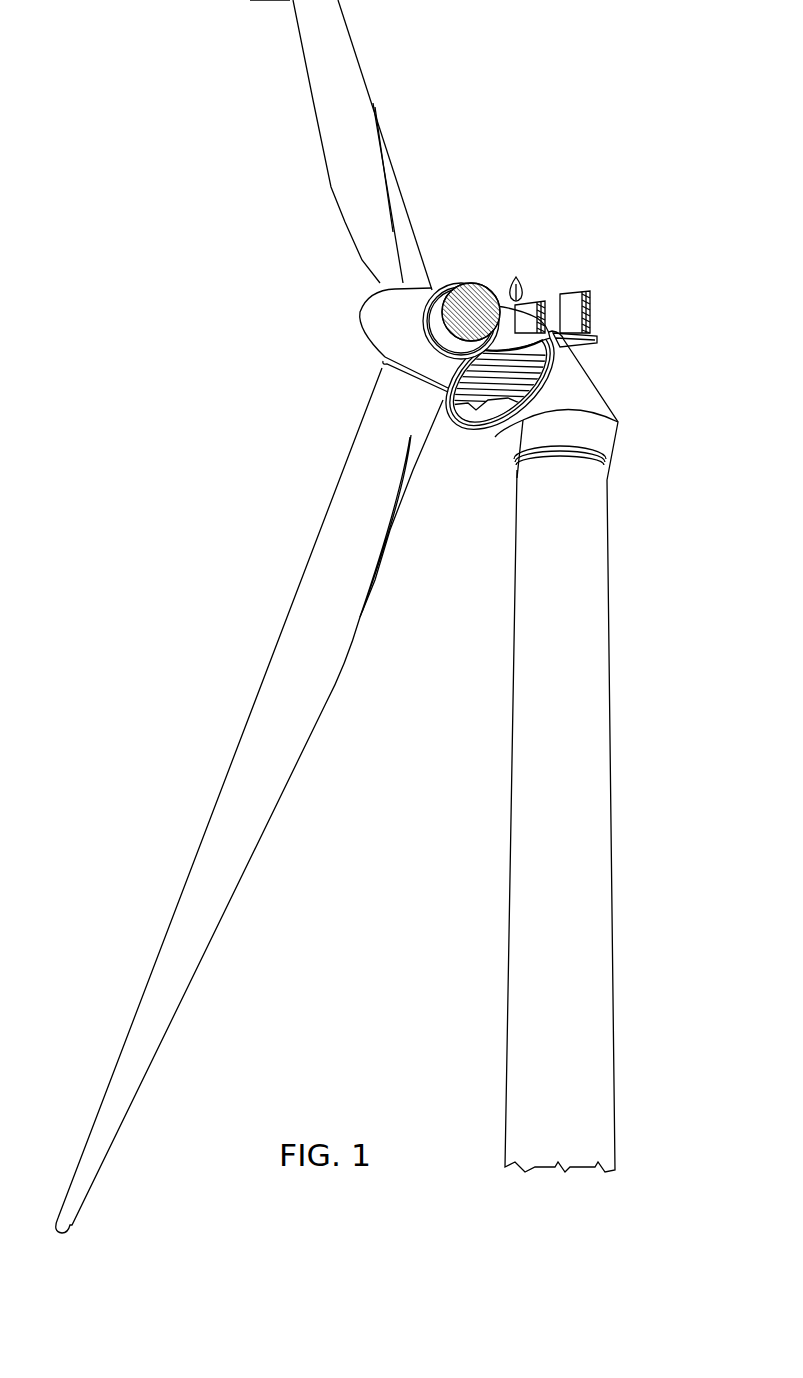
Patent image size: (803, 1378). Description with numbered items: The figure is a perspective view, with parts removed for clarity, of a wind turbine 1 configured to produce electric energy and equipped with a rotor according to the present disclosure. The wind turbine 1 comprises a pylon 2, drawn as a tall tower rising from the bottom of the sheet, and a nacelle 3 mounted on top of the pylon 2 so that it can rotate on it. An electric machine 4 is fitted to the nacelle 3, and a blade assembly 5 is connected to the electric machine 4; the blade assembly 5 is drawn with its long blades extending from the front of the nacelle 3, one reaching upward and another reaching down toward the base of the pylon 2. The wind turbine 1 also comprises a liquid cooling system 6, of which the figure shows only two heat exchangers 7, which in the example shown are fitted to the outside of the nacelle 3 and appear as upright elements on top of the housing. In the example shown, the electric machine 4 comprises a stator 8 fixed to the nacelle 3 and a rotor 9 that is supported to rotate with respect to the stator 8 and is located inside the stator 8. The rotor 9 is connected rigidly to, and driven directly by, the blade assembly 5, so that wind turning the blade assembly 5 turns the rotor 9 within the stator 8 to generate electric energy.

The wind turbine 1 is at (620, 204).
The pylon 2 is at (546, 803).
The nacelle 3 is at (582, 394).
The electric machine 4 is at (462, 445).
The blade assembly 5 is at (285, 307).
The liquid cooling system 6 is at (626, 318).
The heat exchangers 7 is at (528, 312).
The stator 8 is at (540, 348).
The rotor 9 is at (507, 388).